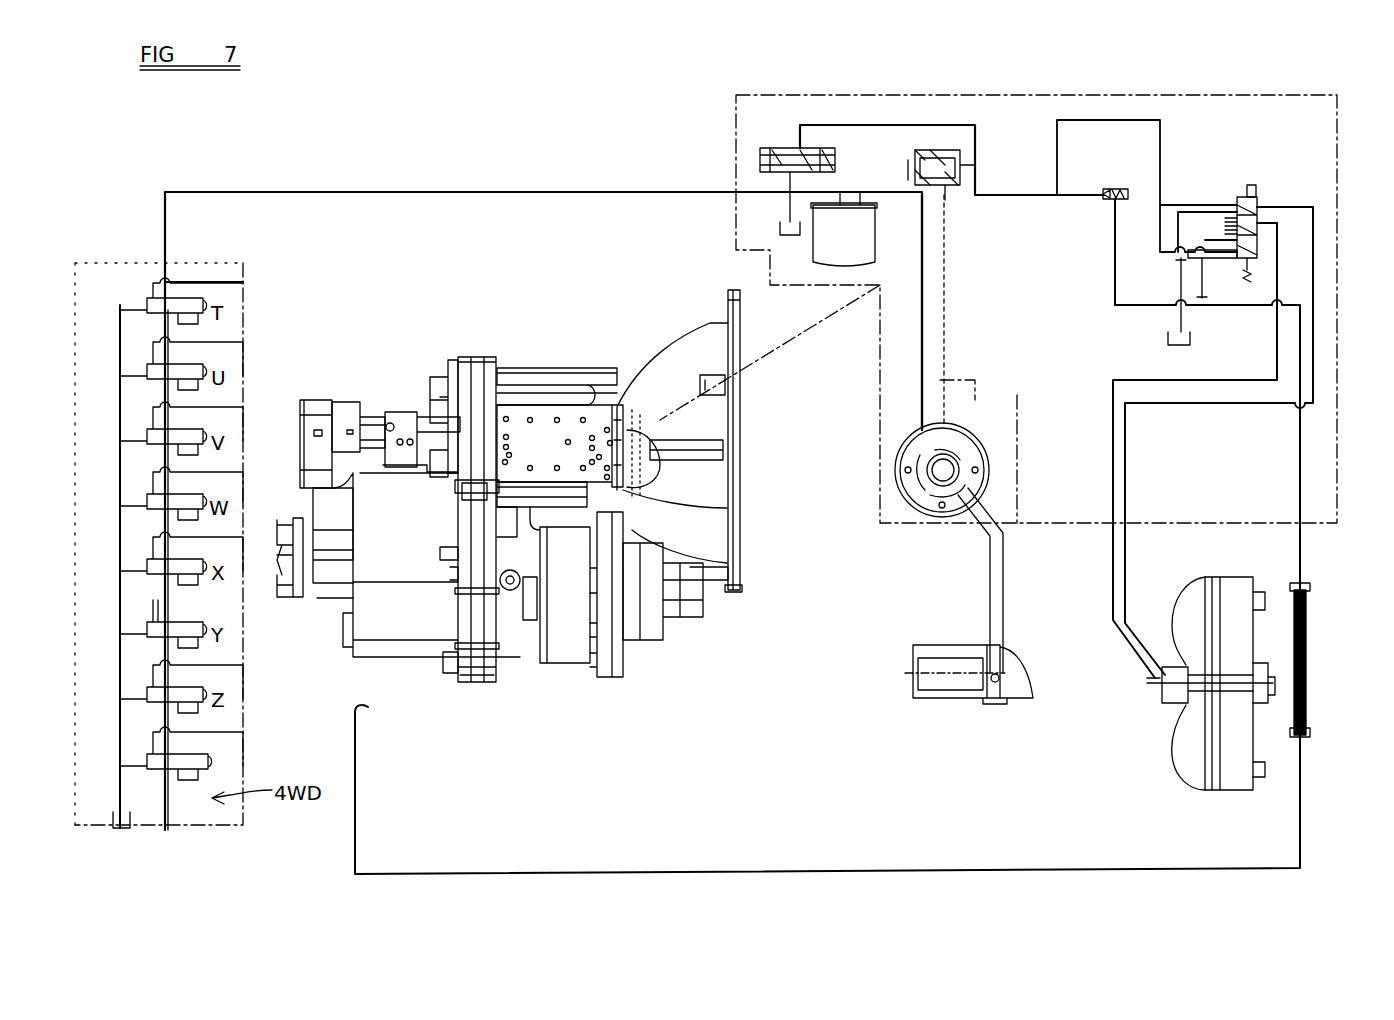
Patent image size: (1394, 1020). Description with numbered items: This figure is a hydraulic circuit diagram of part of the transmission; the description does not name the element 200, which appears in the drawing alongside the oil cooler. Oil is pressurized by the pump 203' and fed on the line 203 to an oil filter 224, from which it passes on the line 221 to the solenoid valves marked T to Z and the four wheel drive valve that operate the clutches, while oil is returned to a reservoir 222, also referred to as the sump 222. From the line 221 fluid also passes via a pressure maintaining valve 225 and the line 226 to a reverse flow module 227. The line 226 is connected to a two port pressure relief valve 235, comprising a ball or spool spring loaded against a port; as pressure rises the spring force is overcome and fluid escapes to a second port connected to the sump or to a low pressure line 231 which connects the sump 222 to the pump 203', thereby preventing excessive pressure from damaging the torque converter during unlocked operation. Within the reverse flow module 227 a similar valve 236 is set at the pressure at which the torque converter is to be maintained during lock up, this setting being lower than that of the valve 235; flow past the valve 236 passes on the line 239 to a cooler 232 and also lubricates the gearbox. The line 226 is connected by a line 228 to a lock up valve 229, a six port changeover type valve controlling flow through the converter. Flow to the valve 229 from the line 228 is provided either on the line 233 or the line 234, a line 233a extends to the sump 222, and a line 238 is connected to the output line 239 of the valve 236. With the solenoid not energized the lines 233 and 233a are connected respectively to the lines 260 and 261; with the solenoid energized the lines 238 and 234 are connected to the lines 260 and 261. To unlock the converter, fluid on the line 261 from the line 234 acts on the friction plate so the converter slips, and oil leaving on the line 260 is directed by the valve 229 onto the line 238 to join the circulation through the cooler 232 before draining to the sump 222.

The brake 200 is at (1230, 790).
The line 203 is at (888, 312).
The pump 203' is at (932, 496).
The line 221 is at (533, 192).
The reservoir 222 is at (978, 700).
The oil filter 224 is at (872, 250).
The pressure maintaining valve 225 is at (835, 155).
The line 226 is at (897, 120).
The reverse flow module 227 is at (1337, 128).
The line 228 is at (1162, 140).
The lock up valve 229 is at (1264, 198).
The low pressure line 231 is at (1003, 580).
The cooler 232 is at (1306, 632).
The line 233 is at (1196, 205).
The line 233a is at (1177, 285).
The line 234 is at (1208, 258).
The two port pressure relief valve 235 is at (945, 190).
The valve 236 is at (1108, 198).
The line 238 is at (1205, 298).
The line 239 is at (1115, 270).
The line 260 is at (1328, 265).
The line 261 is at (1277, 288).